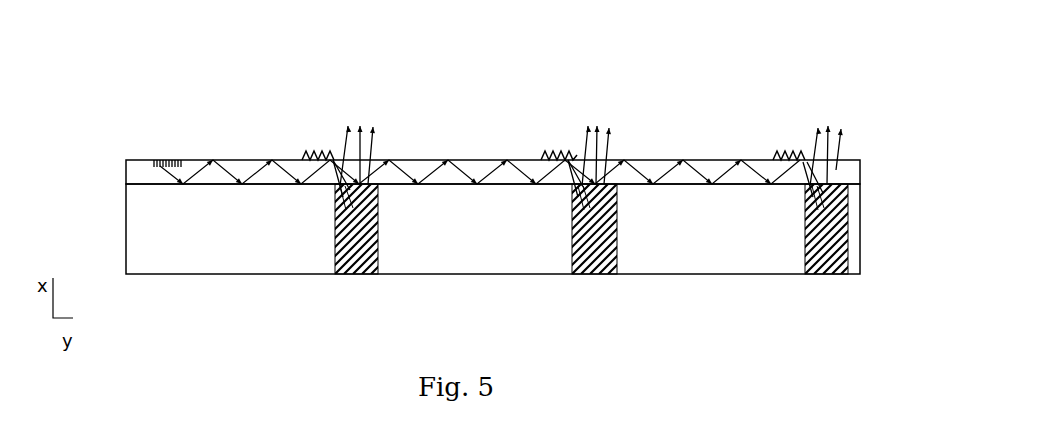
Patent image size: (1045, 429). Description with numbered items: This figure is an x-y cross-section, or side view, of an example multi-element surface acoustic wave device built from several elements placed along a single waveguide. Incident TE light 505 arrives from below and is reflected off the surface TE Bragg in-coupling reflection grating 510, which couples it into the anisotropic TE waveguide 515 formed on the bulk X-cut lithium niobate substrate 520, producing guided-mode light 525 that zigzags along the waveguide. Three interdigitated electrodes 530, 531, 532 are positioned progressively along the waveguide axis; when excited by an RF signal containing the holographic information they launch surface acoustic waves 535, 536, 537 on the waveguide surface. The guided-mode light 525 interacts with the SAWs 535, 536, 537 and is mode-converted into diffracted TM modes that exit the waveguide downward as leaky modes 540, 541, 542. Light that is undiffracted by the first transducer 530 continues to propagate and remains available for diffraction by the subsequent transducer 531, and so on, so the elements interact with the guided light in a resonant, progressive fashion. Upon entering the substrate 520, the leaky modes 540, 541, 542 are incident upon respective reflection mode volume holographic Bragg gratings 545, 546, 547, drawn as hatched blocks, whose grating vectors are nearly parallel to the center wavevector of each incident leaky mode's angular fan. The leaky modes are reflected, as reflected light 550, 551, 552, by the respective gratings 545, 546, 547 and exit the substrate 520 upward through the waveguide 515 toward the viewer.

The incident TE light 505 is at (449, 237).
The Bragg in-coupling reflection grating 510 is at (165, 158).
The anisotropic waveguide 515 is at (137, 168).
The substrate 520 is at (138, 242).
The guided-mode light 525 is at (234, 170).
The interdigitated electrode 530 is at (338, 157).
The interdigitated electrode 531 is at (577, 157).
The interdigitated electrode 532 is at (813, 158).
The surface acoustic wave 535 is at (310, 155).
The surface acoustic wave 536 is at (543, 155).
The surface acoustic wave 537 is at (783, 152).
The leaky mode 540 is at (341, 187).
The leaky mode 541 is at (582, 188).
The leaky mode 542 is at (808, 190).
The reflection mode volume holographic Bragg grating 545 is at (366, 268).
The reflection mode volume holographic Bragg grating 546 is at (598, 267).
The reflection mode volume holographic Bragg grating 547 is at (838, 270).
The reflected leaky mode light 550 is at (368, 147).
The reflected leaky mode light 551 is at (608, 147).
The reflected leaky mode light 552 is at (840, 148).